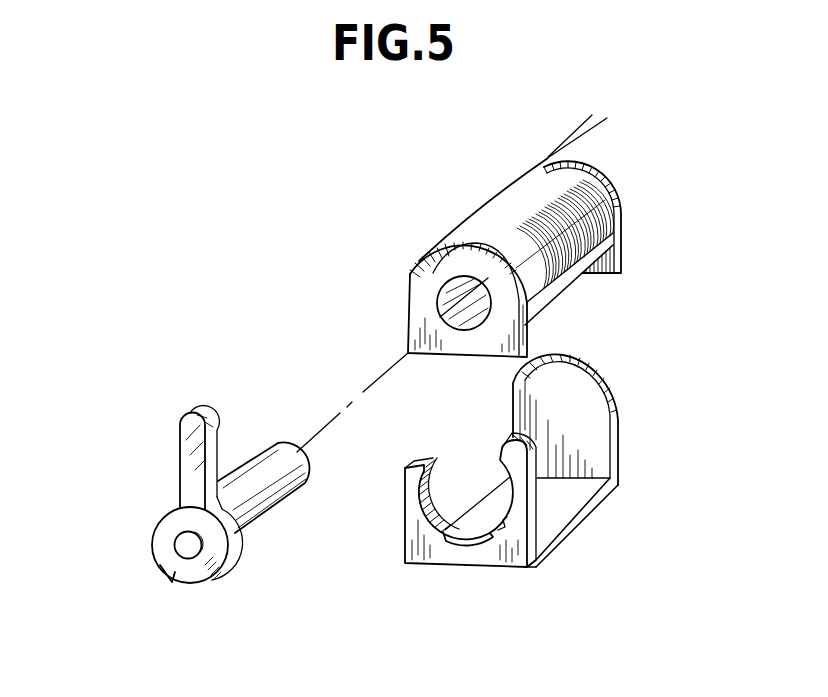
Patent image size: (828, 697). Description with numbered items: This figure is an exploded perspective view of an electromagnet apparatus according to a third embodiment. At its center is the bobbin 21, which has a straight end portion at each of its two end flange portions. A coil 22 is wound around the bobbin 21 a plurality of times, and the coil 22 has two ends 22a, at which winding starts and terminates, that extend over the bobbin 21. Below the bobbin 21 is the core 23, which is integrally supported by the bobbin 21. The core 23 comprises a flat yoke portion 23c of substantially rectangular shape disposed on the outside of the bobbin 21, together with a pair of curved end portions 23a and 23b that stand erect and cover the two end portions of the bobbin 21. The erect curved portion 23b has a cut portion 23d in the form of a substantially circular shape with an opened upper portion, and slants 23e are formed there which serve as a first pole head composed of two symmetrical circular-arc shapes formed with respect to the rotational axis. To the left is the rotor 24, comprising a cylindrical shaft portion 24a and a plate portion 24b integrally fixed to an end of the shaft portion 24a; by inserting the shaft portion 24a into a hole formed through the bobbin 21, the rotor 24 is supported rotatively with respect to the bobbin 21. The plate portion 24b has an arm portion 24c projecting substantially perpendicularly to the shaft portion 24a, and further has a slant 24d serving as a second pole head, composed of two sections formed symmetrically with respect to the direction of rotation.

The bobbin 21 is at (420, 285).
The coil 22 is at (507, 191).
The ends of the coil 22a is at (563, 140).
The core 23 is at (551, 491).
The curved end portion 23a is at (595, 410).
The curved end portion 23b is at (512, 547).
The flat yoke portion 23c is at (550, 513).
The cut portion 23d is at (457, 545).
The slants 23e is at (512, 493).
The rotor 24 is at (209, 516).
The shaft portion 24a is at (263, 497).
The plate portion 24b is at (162, 533).
The arm portion 24c is at (188, 460).
The slant 24d is at (236, 490).